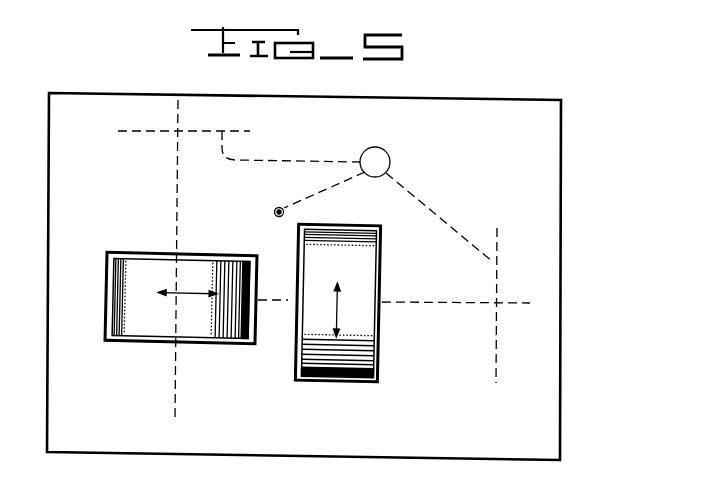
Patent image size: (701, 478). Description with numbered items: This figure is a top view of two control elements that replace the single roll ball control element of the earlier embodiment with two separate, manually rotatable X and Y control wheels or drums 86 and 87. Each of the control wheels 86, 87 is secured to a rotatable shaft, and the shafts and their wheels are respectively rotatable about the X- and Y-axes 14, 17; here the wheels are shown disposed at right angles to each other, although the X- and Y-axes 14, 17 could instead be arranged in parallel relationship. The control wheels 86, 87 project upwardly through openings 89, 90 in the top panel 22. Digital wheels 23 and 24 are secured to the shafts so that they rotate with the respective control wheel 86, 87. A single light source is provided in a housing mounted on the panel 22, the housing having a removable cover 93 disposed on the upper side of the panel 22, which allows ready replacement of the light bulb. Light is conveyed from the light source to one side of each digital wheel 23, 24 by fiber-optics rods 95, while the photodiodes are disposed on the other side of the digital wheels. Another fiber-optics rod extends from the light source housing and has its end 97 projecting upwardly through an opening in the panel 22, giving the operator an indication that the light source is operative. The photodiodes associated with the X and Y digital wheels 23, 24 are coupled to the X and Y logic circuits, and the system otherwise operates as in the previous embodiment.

The X-axis 14 is at (515, 302).
The Y-axis 17 is at (175, 203).
The top panel 22 is at (446, 97).
The X digital wheel 23 is at (502, 256).
The Y digital wheel 24 is at (157, 130).
The X control wheel 86 is at (316, 272).
The Y control wheel 87 is at (181, 298).
The opening 89 is at (363, 303).
The opening 90 is at (181, 319).
The removable cover 93 is at (388, 152).
The fiber-optics rods 95 is at (298, 157).
The end of fiber-optics rod 97 is at (273, 213).